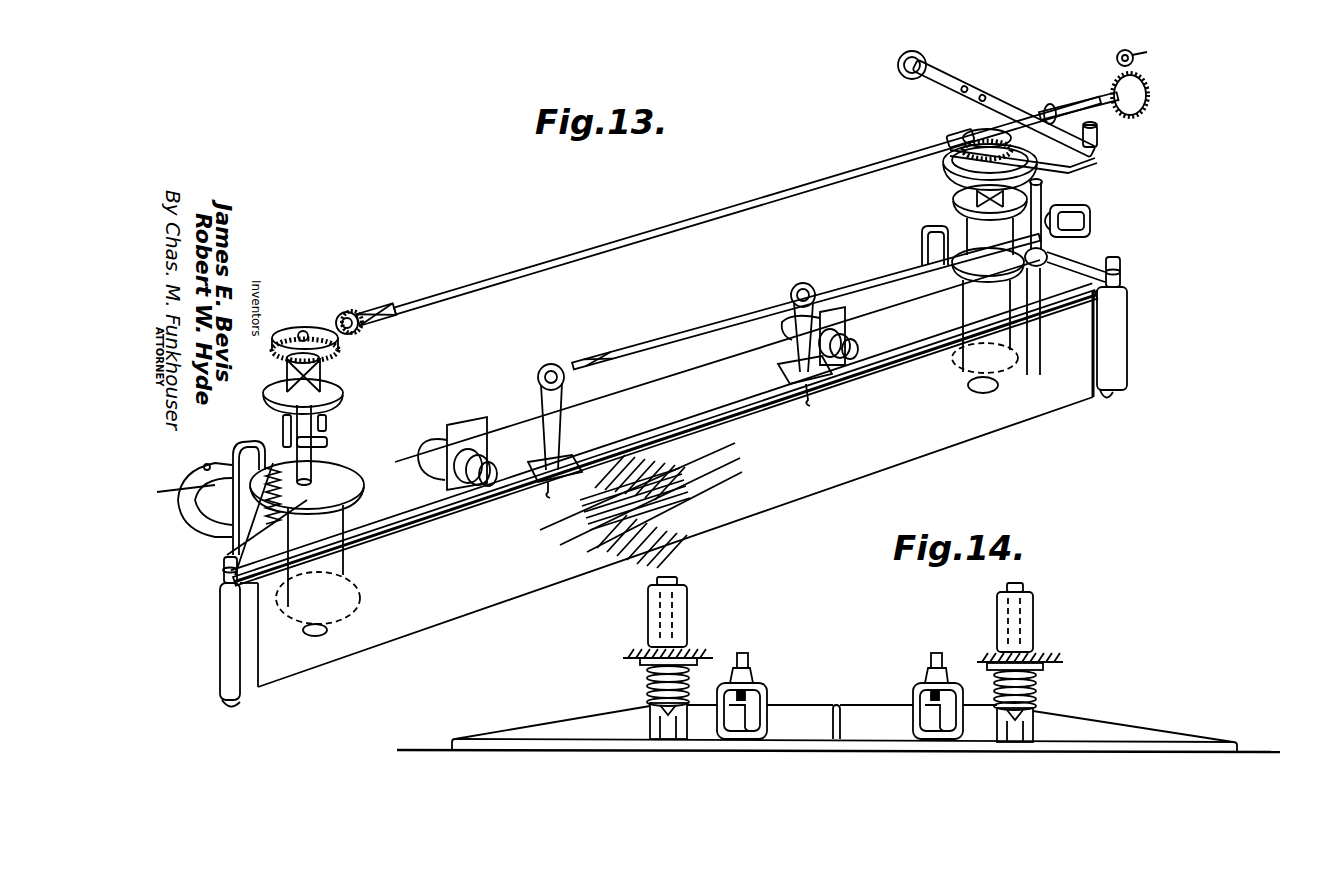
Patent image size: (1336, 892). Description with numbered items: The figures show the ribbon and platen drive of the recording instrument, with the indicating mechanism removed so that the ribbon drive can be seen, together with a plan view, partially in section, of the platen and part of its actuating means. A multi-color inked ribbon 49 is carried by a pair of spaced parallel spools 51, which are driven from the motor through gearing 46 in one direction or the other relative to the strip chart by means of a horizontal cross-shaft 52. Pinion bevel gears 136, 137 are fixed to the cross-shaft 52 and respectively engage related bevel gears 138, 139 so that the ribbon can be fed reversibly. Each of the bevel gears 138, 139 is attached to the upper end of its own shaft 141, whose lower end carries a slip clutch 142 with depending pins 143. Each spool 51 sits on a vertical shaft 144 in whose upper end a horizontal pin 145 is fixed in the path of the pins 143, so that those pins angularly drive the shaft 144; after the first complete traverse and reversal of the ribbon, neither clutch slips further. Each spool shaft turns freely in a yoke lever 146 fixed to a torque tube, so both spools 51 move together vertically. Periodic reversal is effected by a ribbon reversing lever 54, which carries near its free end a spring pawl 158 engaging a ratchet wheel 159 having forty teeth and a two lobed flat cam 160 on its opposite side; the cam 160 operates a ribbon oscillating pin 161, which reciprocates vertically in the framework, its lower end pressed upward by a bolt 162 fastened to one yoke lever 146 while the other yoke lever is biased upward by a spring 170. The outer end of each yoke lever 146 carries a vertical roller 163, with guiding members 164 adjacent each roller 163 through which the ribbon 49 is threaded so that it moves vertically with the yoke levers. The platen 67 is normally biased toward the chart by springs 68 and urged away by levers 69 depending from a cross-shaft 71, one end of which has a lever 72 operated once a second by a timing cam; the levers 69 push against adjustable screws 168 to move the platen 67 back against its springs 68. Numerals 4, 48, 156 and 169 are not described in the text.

In FIG. 13, the ribbon 4 is at (960, 426).
In FIG. 13, the gearing 46 is at (1128, 58).
In FIG. 14, the spring post 48 is at (688, 650).
In FIG. 13, the multi-color inked ribbon 49 is at (506, 600).
In FIG. 13, the spools 51 is at (345, 512).
In FIG. 13, the cross-shaft 52 is at (645, 235).
In FIG. 13, the ribbon reversing lever 54 is at (1010, 108).
In FIG. 13, the platen 67 is at (585, 450).
In FIG. 14, the platen 67 is at (527, 739).
In FIG. 13, the springs 68 is at (458, 485).
In FIG. 14, the springs 68 is at (645, 670).
In FIG. 13, the levers 69 is at (562, 420).
In FIG. 14, the levers 69 is at (765, 700).
In FIG. 13, the cross-shaft 71 is at (643, 345).
In FIG. 13, the lever 72 is at (1090, 222).
In FIG. 13, the pinion bevel gear 136 is at (948, 140).
In FIG. 13, the pinion bevel gear 137 is at (352, 312).
In FIG. 13, the bevel gear 138 is at (975, 133).
In FIG. 13, the bevel gear 139 is at (300, 328).
In FIG. 13, the shaft 141 is at (320, 373).
In FIG. 13, the slip clutch 142 is at (340, 411).
In FIG. 13, the depending pins 143 is at (270, 430).
In FIG. 13, the vertical shaft 144 is at (320, 472).
In FIG. 13, the horizontal pin 145 is at (327, 443).
In FIG. 13, the yoke lever 146 is at (225, 447).
In FIG. 13, the collar 156 is at (1097, 135).
In FIG. 13, the spring pawl 158 is at (1072, 170).
In FIG. 13, the ratchet wheel 159 is at (945, 172).
In FIG. 13, the two lobed flat cam 160 is at (958, 186).
In FIG. 13, the ribbon oscillating pin 161 is at (1043, 195).
In FIG. 13, the bolt 162 is at (1047, 256).
In FIG. 13, the vertical roller 163 is at (222, 633).
In FIG. 13, the guiding members 164 is at (262, 685).
In FIG. 14, the adjustable screws 168 is at (755, 690).
In FIG. 14, the spring 169 is at (648, 696).
In FIG. 13, the spring 170 is at (232, 505).